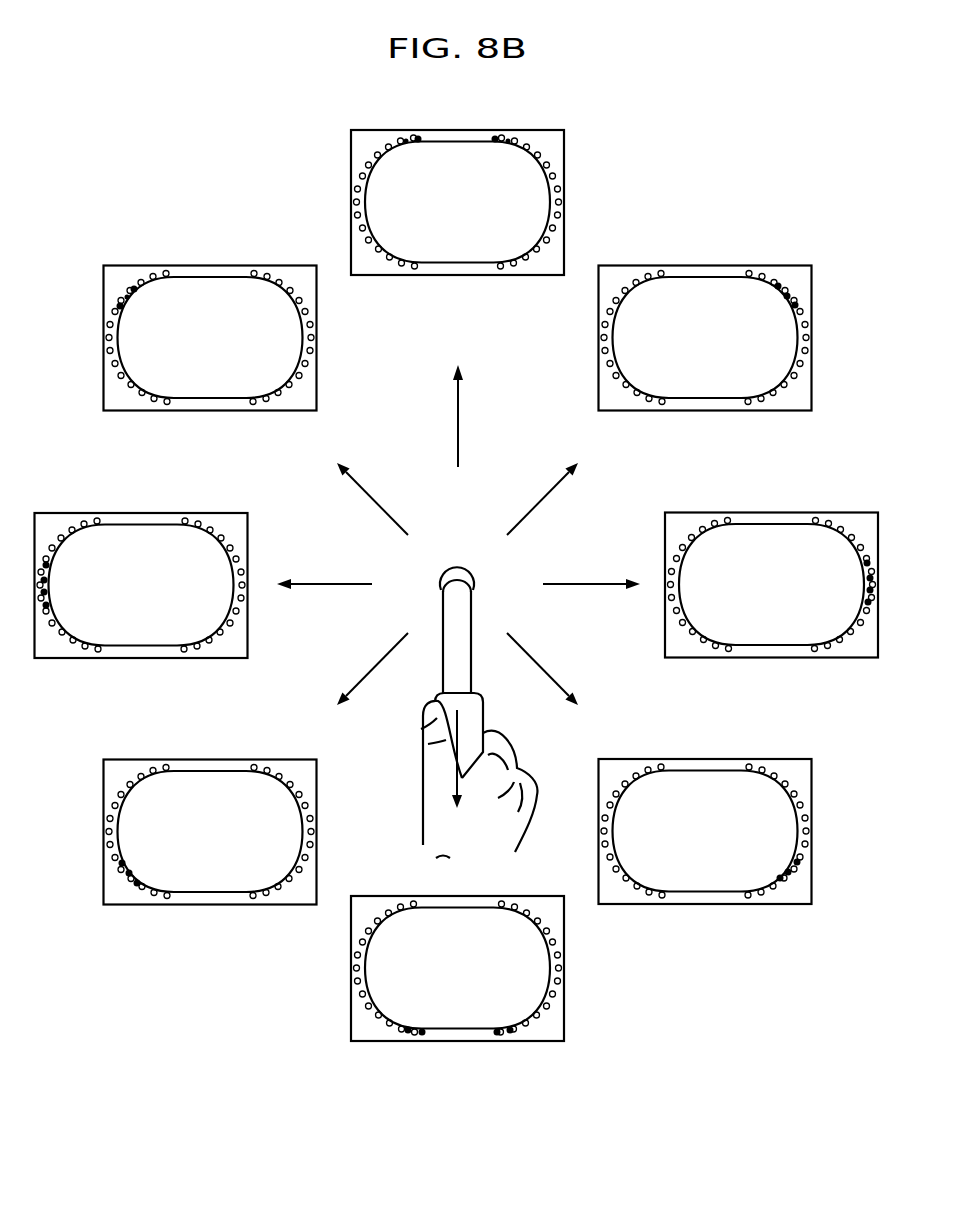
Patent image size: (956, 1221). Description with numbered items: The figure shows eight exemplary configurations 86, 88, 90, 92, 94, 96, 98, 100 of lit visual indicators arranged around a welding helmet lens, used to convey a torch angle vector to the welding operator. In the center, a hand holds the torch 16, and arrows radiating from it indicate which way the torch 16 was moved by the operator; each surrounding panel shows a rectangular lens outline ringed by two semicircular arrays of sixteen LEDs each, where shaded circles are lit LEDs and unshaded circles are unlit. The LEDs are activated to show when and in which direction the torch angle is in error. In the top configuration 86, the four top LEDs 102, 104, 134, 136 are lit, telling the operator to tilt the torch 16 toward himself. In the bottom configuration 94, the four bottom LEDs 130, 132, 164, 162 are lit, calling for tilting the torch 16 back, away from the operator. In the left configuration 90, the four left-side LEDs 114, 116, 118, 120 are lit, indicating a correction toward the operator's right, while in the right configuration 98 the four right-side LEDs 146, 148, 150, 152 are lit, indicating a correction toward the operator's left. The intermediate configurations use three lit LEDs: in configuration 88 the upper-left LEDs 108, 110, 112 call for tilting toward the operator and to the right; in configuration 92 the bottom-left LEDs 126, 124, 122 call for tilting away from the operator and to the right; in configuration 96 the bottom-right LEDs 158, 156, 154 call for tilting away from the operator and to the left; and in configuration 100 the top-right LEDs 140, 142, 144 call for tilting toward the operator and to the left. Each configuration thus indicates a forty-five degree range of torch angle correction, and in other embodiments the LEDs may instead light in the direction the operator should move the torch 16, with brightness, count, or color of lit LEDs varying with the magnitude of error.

The torch 16 is at (472, 647).
The configuration 86 is at (452, 275).
The configuration 88 is at (317, 337).
The configuration 90 is at (248, 545).
The configuration 92 is at (208, 760).
The configuration 94 is at (457, 896).
The configuration 96 is at (706, 759).
The configuration 98 is at (770, 512).
The configuration 100 is at (598, 338).
The LED 102 is at (419, 137).
The LED 104 is at (405, 140).
The LED 108 is at (134, 288).
The LED 110 is at (127, 297).
The LED 112 is at (119, 307).
The LED 114 is at (50, 562).
The LED 116 is at (49, 577).
The LED 118 is at (49, 590).
The LED 120 is at (50, 607).
The LED 122 is at (122, 863).
The LED 124 is at (129, 874).
The LED 126 is at (137, 884).
The LED 130 is at (407, 1031).
The LED 132 is at (422, 1033).
The LED 134 is at (494, 137).
The LED 136 is at (508, 140).
The LED 140 is at (778, 285).
The LED 142 is at (788, 295).
The LED 144 is at (796, 306).
The LED 146 is at (866, 562).
The LED 148 is at (869, 577).
The LED 150 is at (868, 590).
The LED 152 is at (867, 603).
The LED 154 is at (798, 862).
The LED 156 is at (789, 873).
The LED 158 is at (780, 879).
The LED 162 is at (511, 1031).
The LED 164 is at (497, 1033).